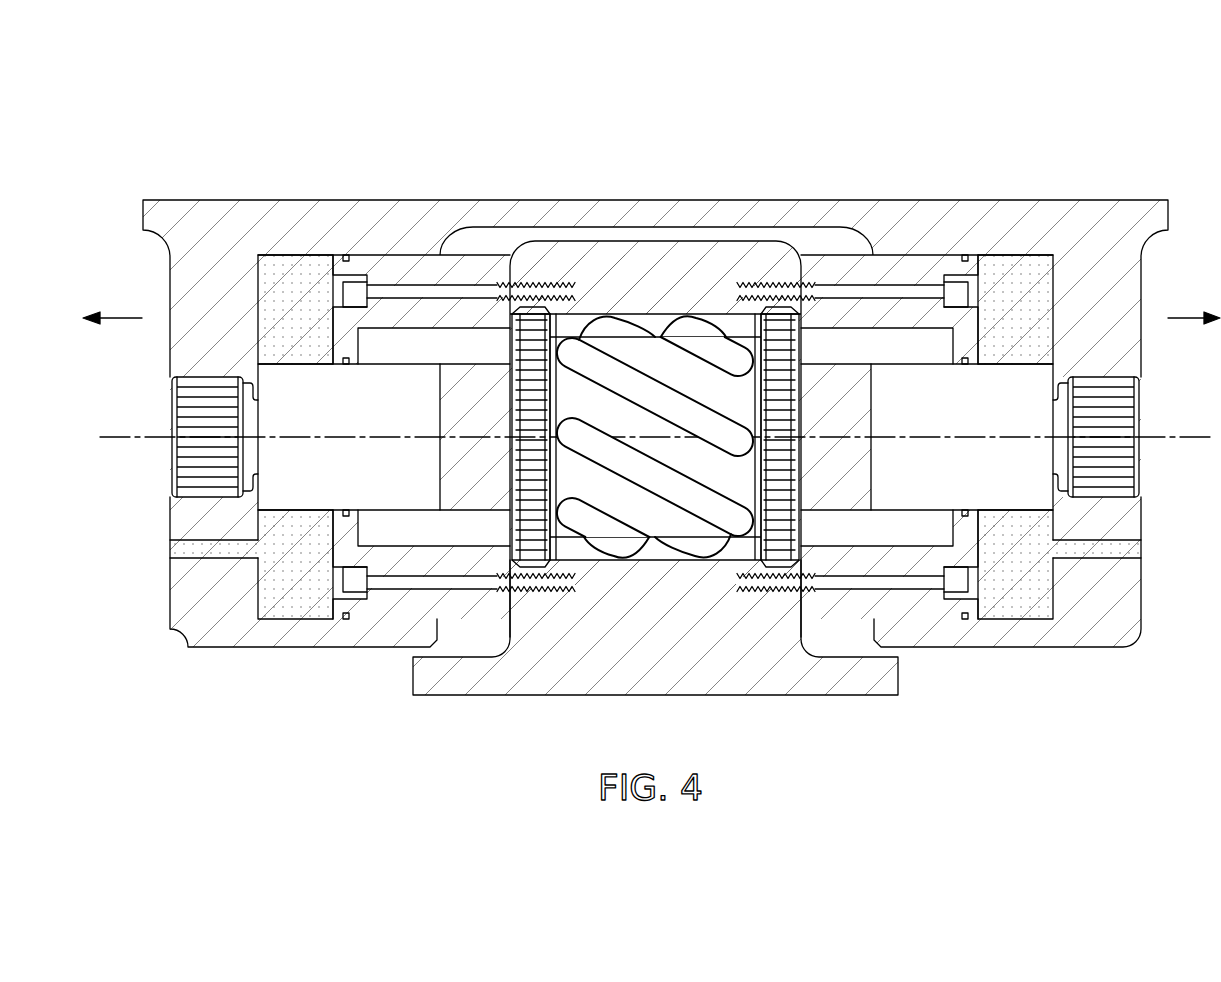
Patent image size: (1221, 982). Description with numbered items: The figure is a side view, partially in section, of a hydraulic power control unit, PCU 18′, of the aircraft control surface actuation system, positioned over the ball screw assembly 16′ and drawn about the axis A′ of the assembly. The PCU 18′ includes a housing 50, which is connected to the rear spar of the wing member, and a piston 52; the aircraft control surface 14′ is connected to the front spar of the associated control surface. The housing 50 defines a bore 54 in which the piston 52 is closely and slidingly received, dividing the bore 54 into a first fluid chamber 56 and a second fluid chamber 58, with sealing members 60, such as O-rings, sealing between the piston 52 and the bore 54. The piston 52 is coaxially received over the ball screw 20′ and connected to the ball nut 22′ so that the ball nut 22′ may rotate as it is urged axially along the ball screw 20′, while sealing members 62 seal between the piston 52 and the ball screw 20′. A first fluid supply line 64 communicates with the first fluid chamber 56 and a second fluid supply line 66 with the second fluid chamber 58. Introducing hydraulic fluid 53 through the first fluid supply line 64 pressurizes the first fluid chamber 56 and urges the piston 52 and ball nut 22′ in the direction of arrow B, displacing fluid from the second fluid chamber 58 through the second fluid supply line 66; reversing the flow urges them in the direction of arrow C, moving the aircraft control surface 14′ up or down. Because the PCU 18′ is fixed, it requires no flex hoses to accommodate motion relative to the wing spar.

The hydraulic PCU 18′ is at (371, 139).
The aircraft control surface 14′ is at (780, 703).
The ball screw assembly 16′ is at (479, 515).
The ball screw 20′ is at (268, 503).
The ball nut 22′ is at (687, 513).
The housing 50 is at (672, 210).
The piston 52 is at (478, 265).
The hydraulic fluid 53 is at (289, 272).
The bore 54 is at (900, 258).
The first fluid chamber 56 is at (297, 605).
The second fluid chamber 58 is at (1014, 607).
The sealing members 60 is at (345, 255).
The sealing members 62 is at (345, 366).
The first fluid supply line 64 is at (195, 562).
The second fluid supply line 66 is at (1118, 562).
The axis A′ is at (1192, 437).
The arrow B is at (1192, 318).
The arrow C is at (118, 318).